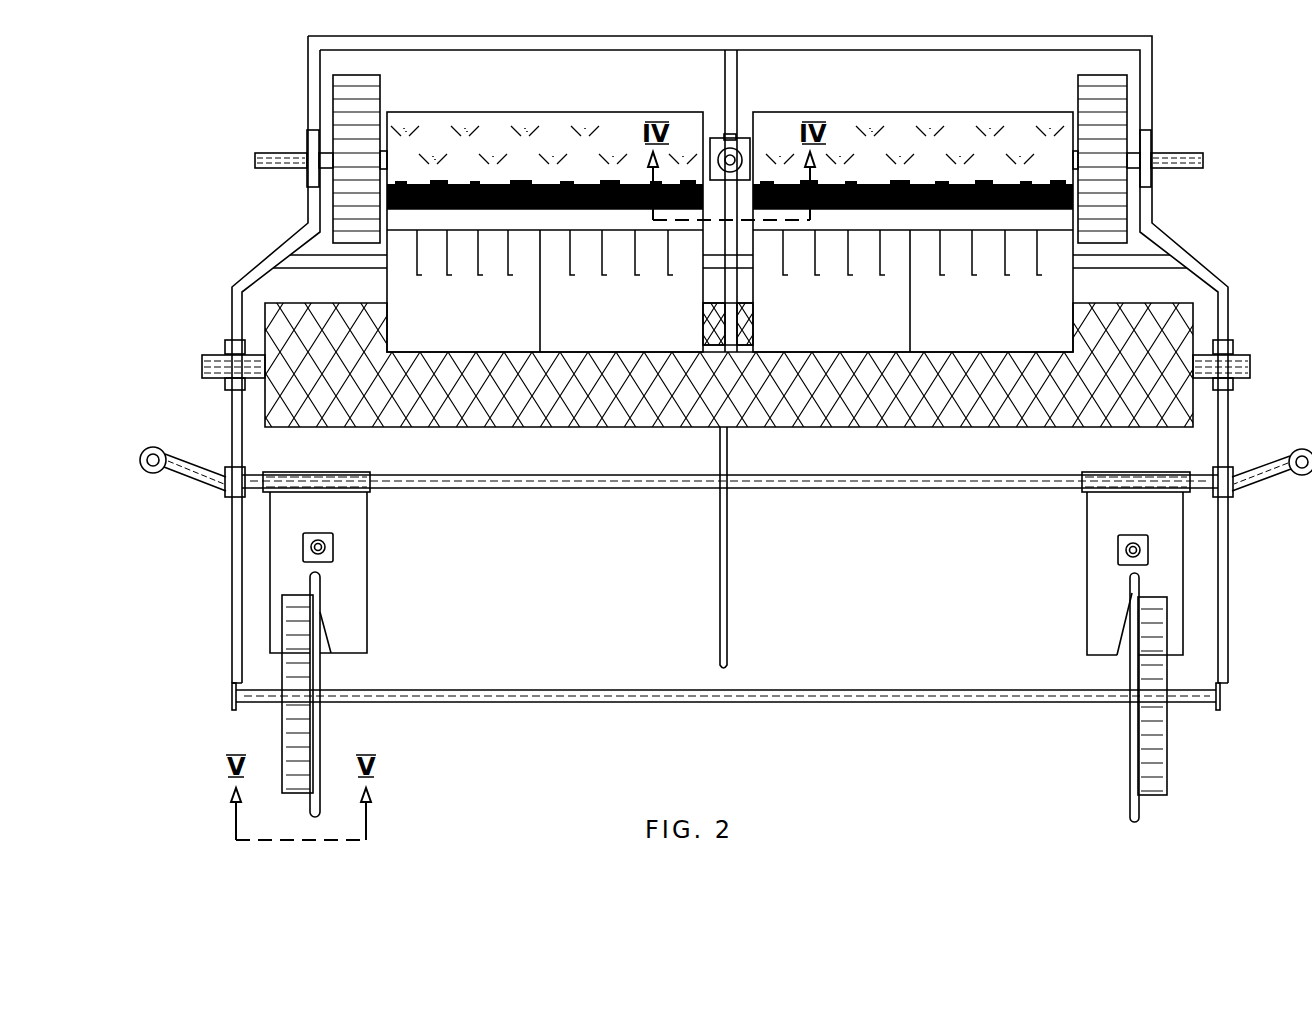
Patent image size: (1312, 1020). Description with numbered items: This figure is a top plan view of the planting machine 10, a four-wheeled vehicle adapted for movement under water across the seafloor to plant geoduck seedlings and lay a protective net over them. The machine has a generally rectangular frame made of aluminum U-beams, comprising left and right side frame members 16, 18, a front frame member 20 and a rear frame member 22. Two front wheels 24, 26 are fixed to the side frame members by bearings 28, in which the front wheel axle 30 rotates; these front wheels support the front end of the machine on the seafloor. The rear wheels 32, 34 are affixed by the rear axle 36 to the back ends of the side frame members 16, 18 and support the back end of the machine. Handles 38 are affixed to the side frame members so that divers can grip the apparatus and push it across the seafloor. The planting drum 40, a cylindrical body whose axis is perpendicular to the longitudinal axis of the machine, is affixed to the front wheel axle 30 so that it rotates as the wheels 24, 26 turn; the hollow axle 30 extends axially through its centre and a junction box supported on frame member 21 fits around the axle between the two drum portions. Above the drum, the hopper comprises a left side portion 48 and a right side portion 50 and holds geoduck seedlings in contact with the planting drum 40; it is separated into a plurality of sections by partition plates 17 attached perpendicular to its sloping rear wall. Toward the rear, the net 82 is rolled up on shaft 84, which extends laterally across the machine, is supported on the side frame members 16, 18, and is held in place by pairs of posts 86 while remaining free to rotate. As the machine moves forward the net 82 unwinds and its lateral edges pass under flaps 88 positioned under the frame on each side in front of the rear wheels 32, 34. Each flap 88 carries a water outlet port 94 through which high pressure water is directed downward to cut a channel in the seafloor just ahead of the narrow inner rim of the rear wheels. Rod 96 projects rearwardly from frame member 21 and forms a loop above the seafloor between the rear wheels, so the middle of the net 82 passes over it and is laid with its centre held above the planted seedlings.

The planting machine 10 is at (1258, 252).
The left side frame member 16 is at (231, 586).
The partition plates 17 is at (507, 276).
The right side frame member 18 is at (1219, 588).
The front frame member 20 is at (907, 50).
The frame member 21 is at (738, 99).
The rear frame member 22 is at (603, 483).
The front wheel 24 is at (372, 96).
The front wheel 26 is at (1082, 99).
The bearings 28 is at (313, 151).
The front wheel axle 30 is at (258, 163).
The rear wheel 32 is at (318, 727).
The rear wheel 34 is at (1134, 748).
The rear axle 36 is at (610, 688).
The handles 38 is at (146, 472).
The planting drum 40 is at (590, 72).
The left side portion of hopper 48 is at (397, 294).
The right side portion of hopper 50 is at (1052, 302).
The net 82 is at (880, 418).
The shaft 84 is at (208, 366).
The posts 86 is at (229, 346).
The flaps 88 is at (350, 621).
The water outlet port 94 is at (324, 547).
The rod 96 is at (728, 582).